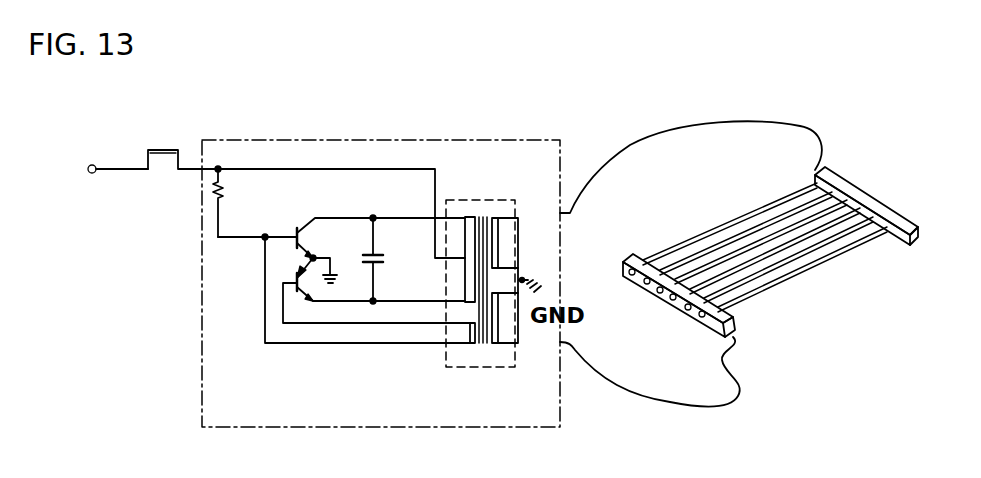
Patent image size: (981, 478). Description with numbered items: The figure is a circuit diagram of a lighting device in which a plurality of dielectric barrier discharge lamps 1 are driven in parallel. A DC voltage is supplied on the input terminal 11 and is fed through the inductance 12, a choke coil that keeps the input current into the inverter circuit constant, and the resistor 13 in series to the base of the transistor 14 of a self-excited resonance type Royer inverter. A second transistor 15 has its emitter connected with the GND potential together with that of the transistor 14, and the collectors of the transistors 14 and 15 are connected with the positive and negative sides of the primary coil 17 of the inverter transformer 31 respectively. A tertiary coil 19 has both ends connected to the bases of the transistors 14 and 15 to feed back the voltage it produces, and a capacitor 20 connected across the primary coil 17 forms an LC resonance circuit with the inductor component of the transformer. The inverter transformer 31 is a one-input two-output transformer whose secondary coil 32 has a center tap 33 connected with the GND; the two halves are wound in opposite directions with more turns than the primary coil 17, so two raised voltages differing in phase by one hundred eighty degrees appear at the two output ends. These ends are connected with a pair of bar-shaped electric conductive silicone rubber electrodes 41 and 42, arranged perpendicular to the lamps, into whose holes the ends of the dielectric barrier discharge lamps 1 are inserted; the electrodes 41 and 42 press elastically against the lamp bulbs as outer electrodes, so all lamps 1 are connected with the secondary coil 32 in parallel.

The dielectric barrier discharge lamp 1 is at (787, 227).
The input terminal 11 is at (95, 160).
The inductance 12 is at (160, 172).
The resistor 13 is at (232, 190).
The transistor 14 is at (304, 222).
The transistor 15 is at (295, 295).
The primary coil 17 is at (458, 208).
The tertiary coil 19 is at (463, 335).
The capacitor 20 is at (383, 261).
The inverter transformer 31 is at (498, 194).
The secondary coil 32 is at (510, 247).
The center tap 33 is at (524, 277).
The electrode 41 is at (737, 322).
The electrode 42 is at (908, 248).